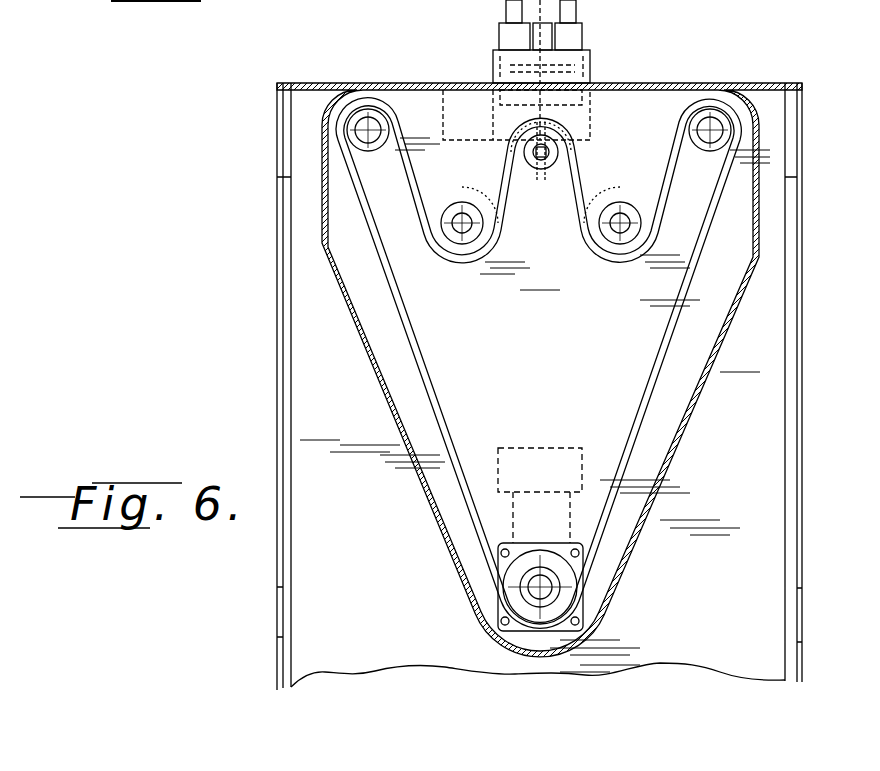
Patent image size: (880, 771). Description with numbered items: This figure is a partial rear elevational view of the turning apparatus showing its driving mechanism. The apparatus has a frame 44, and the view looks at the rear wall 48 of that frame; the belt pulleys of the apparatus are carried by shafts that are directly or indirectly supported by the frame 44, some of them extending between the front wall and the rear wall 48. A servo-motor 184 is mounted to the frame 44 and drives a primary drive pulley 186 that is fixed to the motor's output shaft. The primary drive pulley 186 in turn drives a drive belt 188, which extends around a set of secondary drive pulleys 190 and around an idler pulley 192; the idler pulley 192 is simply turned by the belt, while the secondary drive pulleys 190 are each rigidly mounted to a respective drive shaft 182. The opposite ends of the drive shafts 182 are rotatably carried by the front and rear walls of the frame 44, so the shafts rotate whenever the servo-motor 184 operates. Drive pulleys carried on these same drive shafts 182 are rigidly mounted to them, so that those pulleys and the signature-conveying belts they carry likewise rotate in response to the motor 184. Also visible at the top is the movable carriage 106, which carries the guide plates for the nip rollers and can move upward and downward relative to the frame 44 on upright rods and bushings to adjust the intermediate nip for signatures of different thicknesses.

The frame 44 is at (268, 315).
The rear wall 48 is at (731, 604).
The movable carriage 106 is at (590, 45).
The drive shafts 182 is at (372, 124).
The servo-motor 184 is at (548, 447).
The primary drive pulley 186 is at (512, 573).
The drive belt 188 is at (658, 372).
The secondary drive pulleys 190 is at (368, 152).
The idler pulley 192 is at (553, 172).